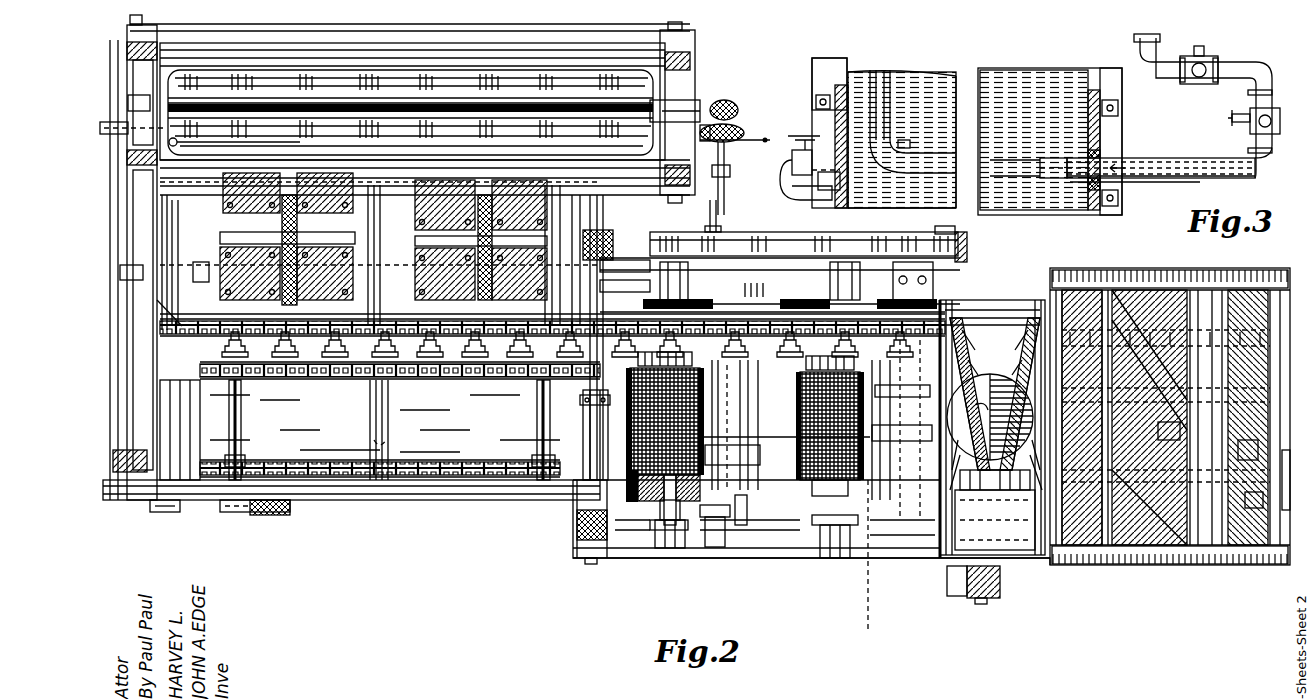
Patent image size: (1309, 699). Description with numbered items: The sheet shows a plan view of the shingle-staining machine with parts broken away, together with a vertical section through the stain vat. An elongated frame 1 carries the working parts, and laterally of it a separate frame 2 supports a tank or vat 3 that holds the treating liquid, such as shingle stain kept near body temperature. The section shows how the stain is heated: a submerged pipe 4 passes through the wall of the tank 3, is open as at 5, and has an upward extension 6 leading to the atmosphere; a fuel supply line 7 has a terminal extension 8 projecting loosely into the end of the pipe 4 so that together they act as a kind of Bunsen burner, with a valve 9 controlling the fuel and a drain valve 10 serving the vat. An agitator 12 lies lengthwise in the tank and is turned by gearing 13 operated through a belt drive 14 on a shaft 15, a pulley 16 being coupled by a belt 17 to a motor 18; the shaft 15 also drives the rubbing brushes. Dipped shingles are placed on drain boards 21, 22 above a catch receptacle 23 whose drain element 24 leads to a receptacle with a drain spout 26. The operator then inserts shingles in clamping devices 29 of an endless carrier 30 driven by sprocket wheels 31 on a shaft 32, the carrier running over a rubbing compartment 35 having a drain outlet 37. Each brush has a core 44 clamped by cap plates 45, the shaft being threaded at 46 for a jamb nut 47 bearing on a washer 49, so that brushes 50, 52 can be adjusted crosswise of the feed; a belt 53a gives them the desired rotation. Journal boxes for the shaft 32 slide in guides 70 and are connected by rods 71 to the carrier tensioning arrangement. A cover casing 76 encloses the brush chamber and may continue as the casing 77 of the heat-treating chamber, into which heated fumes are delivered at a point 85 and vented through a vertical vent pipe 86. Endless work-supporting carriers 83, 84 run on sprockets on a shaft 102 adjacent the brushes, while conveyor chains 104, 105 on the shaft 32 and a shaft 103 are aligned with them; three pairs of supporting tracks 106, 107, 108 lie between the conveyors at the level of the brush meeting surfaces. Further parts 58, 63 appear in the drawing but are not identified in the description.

In FIG. 2, the frame 1 is at (340, 500).
In FIG. 2, the separate frame 2 is at (690, 60).
In FIG. 2, the tank or vat 3 is at (630, 80).
In FIG. 3, the tank or vat 3 is at (1095, 130).
In FIG. 2, the submerged pipe 4 is at (362, 140).
In FIG. 3, the submerged pipe 4 is at (1058, 172).
In FIG. 3, the open end of pipe 5 is at (1182, 158).
In FIG. 2, the upward extension 6 is at (178, 140).
In FIG. 3, the upward extension 6 is at (886, 96).
In FIG. 2, the supply line 7 is at (762, 139).
In FIG. 3, the supply line 7 is at (1266, 152).
In FIG. 2, the terminal extension 8 is at (724, 178).
In FIG. 3, the terminal extension 8 is at (1202, 176).
In FIG. 3, the valve 9 is at (1256, 128).
In FIG. 3, the drain valve 10 is at (812, 204).
In FIG. 2, the agitator 12 is at (455, 75).
In FIG. 2, the gearing 13 is at (715, 128).
In FIG. 2, the belt drive 14 is at (843, 246).
In FIG. 2, the shaft 15 is at (925, 238).
In FIG. 2, the pulley 16 is at (870, 560).
In FIG. 2, the belt 17 is at (1140, 562).
In FIG. 2, the motor 18 is at (1245, 562).
In FIG. 2, the drain board 21 is at (225, 184).
In FIG. 2, the drain board 22 is at (417, 202).
In FIG. 2, the catch receptacle 23 is at (592, 206).
In FIG. 2, the drain element 24 is at (175, 325).
In FIG. 2, the drain spout 26 is at (380, 445).
In FIG. 2, the clamping devices 29 is at (428, 358).
In FIG. 2, the endless carrier 30 is at (405, 318).
In FIG. 2, the sprocket wheels 31 is at (240, 316).
In FIG. 2, the shaft 32 is at (245, 419).
In FIG. 2, the rubbing or stroking compartment 35 is at (818, 545).
In FIG. 2, the drain outlet 37 is at (690, 528).
In FIG. 2, the core 44 is at (640, 498).
In FIG. 2, the cap plate 45 is at (712, 520).
In FIG. 2, the threads 46 is at (676, 508).
In FIG. 2, the jamb nut 47 is at (665, 508).
In FIG. 2, the washer 49 is at (655, 508).
In FIG. 2, the brush 50 is at (704, 470).
In FIG. 2, the brush 52 is at (815, 494).
In FIG. 2, the belt 53a is at (772, 300).
In FIG. 2, the carrier clamp 58 is at (325, 356).
In FIG. 2, the carrier clamp 63 is at (378, 356).
In FIG. 2, the guides 70 is at (198, 262).
In FIG. 2, the rods 71 is at (138, 263).
In FIG. 2, the cover casing 76 is at (880, 560).
In FIG. 2, the casing 77 is at (1150, 292).
In FIG. 2, the endless work supporting carrier 83 is at (1122, 468).
In FIG. 2, the endless work supporting carrier 84 is at (1125, 405).
In FIG. 2, the delivery point 85 is at (996, 434).
In FIG. 2, the vertical vent pipe 86 is at (1030, 540).
In FIG. 2, the shaft 102 is at (950, 582).
In FIG. 2, the shaft 103 is at (538, 424).
In FIG. 2, the conveyor chain 104 is at (445, 378).
In FIG. 2, the conveyor chain 105 is at (418, 462).
In FIG. 2, the shingle supporting tracks 106 is at (600, 460).
In FIG. 2, the shingle supporting tracks 107 is at (782, 420).
In FIG. 2, the shingle supporting tracks 108 is at (910, 408).